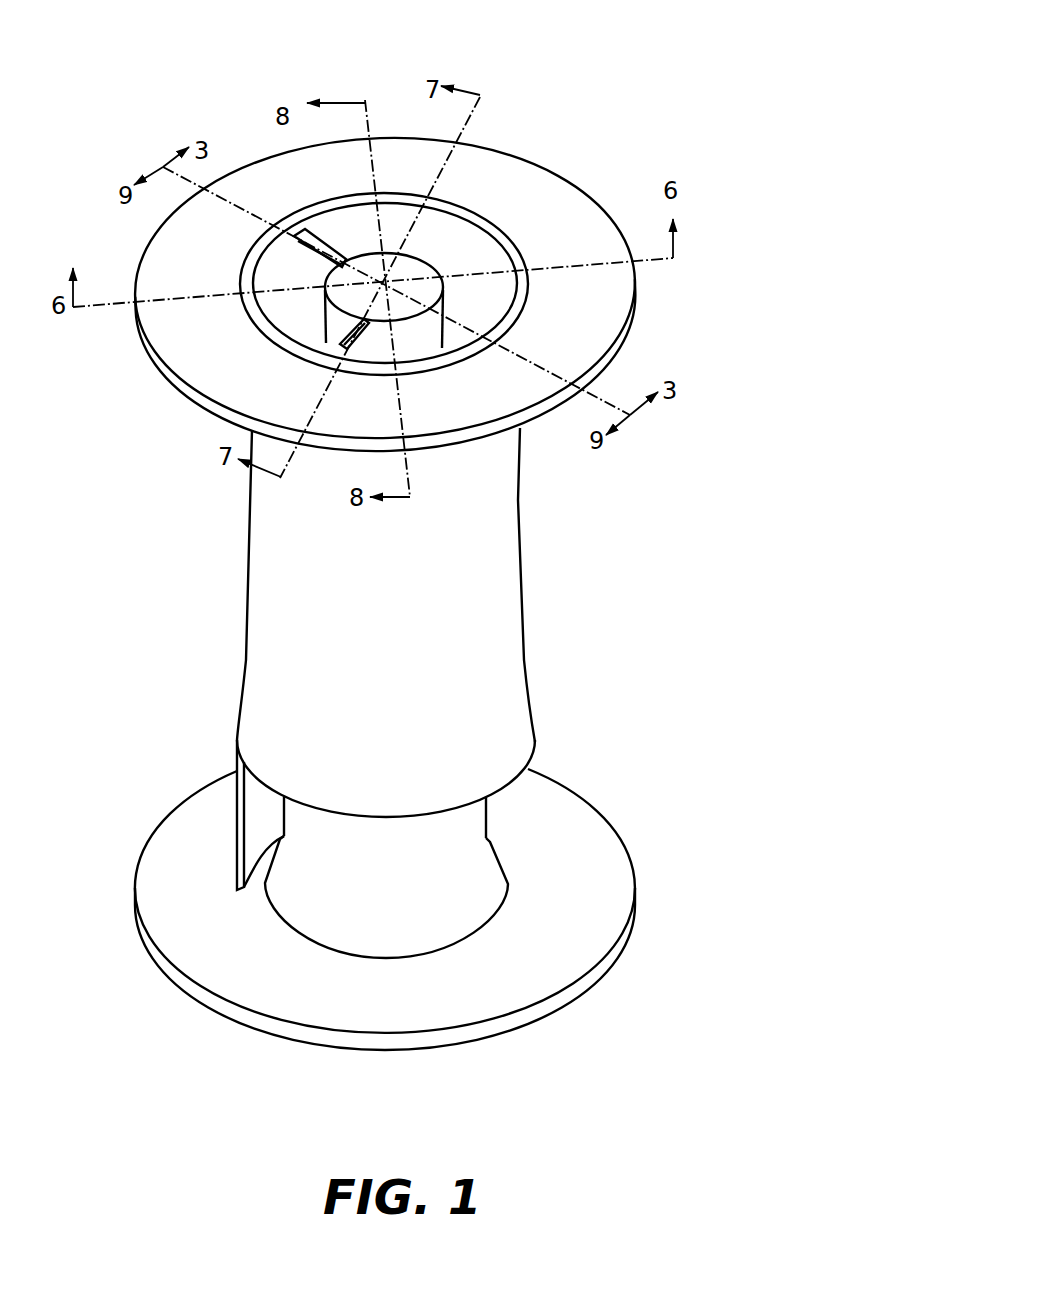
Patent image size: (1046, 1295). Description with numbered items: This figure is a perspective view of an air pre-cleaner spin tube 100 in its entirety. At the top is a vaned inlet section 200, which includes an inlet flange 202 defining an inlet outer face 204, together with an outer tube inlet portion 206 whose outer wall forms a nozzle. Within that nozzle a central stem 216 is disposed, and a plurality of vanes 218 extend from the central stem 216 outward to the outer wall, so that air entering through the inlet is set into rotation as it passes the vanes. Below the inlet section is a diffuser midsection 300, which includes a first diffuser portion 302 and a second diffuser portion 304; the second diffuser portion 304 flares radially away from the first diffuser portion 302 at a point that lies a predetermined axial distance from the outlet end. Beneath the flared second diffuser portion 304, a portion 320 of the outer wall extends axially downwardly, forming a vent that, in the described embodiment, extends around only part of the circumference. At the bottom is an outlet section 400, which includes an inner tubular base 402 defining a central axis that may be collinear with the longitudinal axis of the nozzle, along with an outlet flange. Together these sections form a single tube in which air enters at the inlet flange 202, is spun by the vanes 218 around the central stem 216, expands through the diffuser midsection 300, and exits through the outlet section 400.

The air pre-cleaner spin tube 100 is at (758, 99).
The vaned inlet section 200 is at (453, 255).
The inlet flange 202 is at (613, 312).
The inlet outer face 204 is at (488, 401).
The outer tube inlet portion 206 is at (524, 447).
The central stem 216 is at (505, 288).
The vanes 218 is at (335, 243).
The diffuser midsection 300 is at (437, 622).
The first diffuser portion 302 is at (524, 621).
The second diffuser portion 304 is at (537, 733).
The portion of the outer wall 320 is at (236, 848).
The outlet section 400 is at (533, 838).
The inner tubular base 402 is at (466, 895).